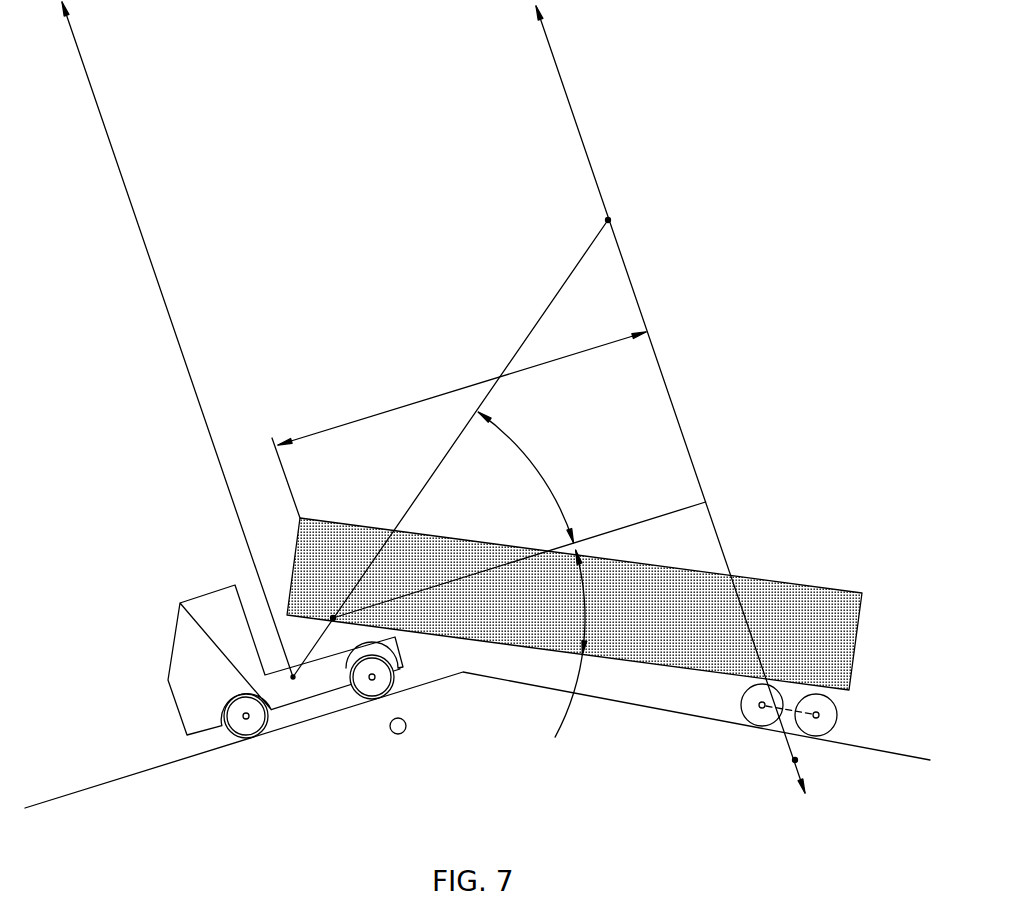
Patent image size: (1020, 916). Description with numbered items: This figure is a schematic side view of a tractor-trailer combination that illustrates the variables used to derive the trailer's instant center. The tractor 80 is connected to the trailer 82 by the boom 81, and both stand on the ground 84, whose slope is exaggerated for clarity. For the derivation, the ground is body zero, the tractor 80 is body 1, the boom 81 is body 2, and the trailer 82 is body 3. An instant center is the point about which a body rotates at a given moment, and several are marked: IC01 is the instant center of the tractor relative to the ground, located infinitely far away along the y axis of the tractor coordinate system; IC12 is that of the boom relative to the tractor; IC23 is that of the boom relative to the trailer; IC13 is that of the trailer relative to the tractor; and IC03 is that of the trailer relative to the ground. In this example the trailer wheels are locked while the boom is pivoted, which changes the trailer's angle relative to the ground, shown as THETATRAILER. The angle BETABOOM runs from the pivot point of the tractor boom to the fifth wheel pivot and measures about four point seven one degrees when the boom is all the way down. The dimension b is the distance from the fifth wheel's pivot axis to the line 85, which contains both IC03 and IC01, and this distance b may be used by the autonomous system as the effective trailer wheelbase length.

The body 1 (tractor) 1 is at (285, 660).
The body 2 (boom) 2 is at (564, 680).
The body 3 (trailer) 3 is at (853, 560).
The tractor 80 is at (250, 670).
The boom 81 is at (316, 647).
The trailer 82 is at (583, 604).
The ground 84 is at (672, 715).
The line 85 is at (673, 405).
The instant center of the tractor relative to the ground IC01 is at (433, 397).
The instant center of the tractor's boom relative to tractor IC12 is at (292, 697).
The instant center of the trailer relative to the tractor IC13 is at (630, 220).
The instant center of the tractor's boom relative to the trailer IC23 is at (329, 614).
The instant center of the trailer relative to the ground IC03 is at (776, 762).
The dimension b is at (459, 425).
The boom angle β_boom BETABOOM is at (556, 477).
The trailer angle θ_trailer THETATRAILER is at (494, 659).